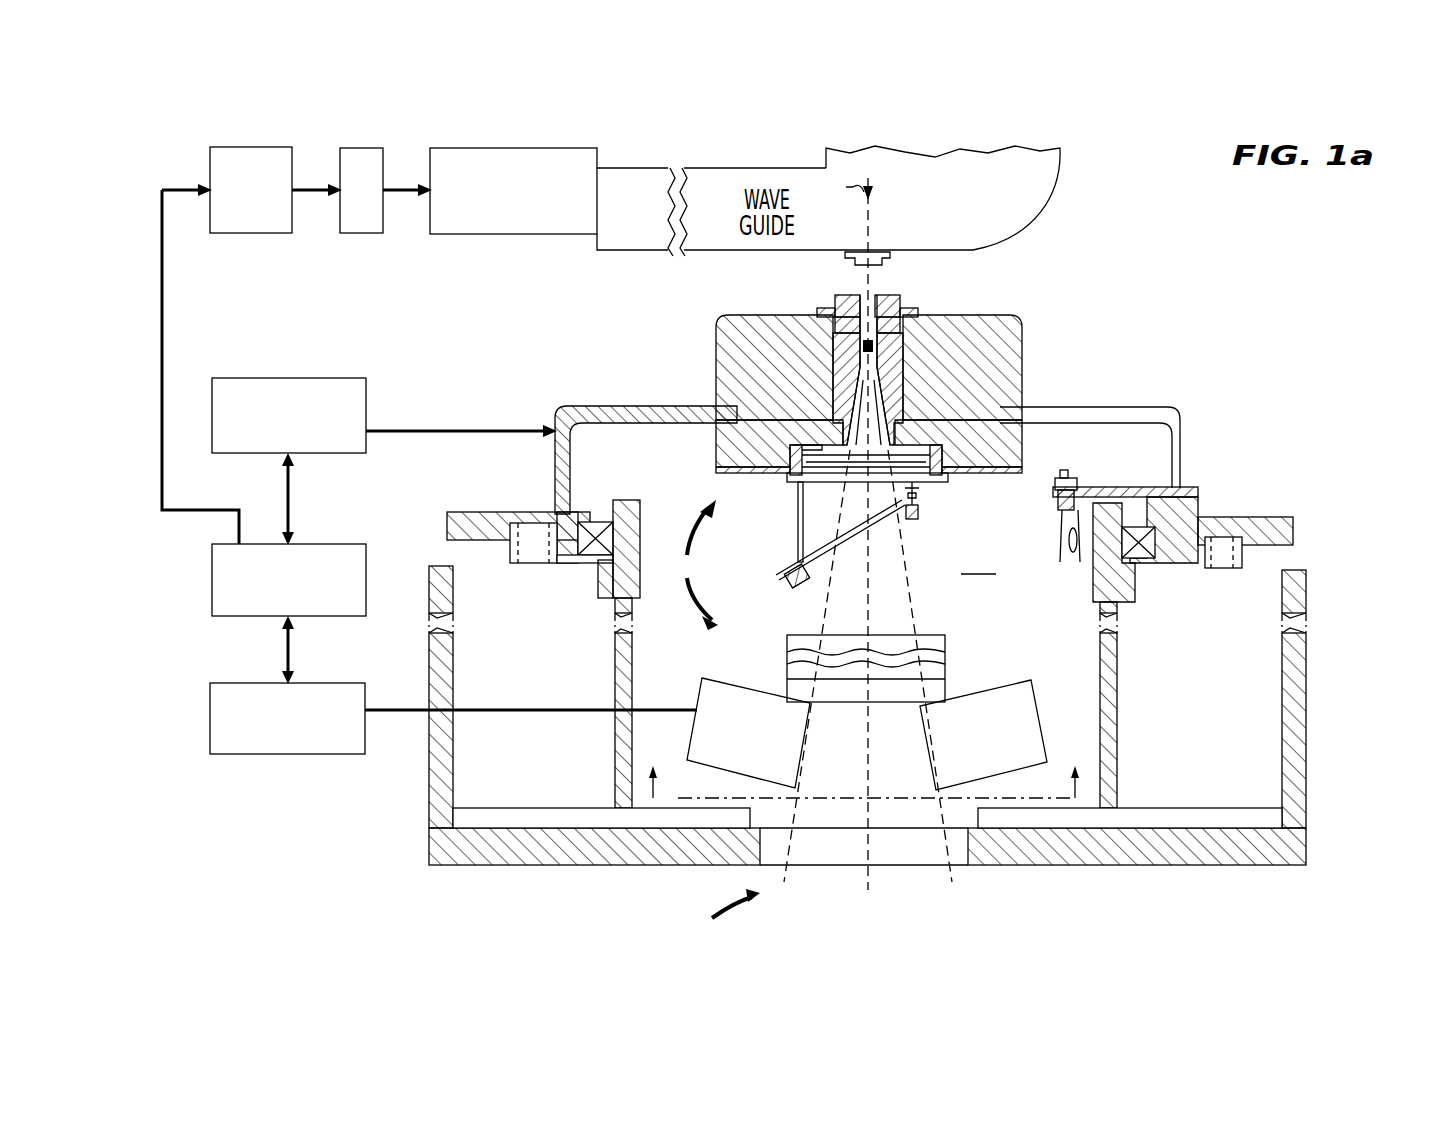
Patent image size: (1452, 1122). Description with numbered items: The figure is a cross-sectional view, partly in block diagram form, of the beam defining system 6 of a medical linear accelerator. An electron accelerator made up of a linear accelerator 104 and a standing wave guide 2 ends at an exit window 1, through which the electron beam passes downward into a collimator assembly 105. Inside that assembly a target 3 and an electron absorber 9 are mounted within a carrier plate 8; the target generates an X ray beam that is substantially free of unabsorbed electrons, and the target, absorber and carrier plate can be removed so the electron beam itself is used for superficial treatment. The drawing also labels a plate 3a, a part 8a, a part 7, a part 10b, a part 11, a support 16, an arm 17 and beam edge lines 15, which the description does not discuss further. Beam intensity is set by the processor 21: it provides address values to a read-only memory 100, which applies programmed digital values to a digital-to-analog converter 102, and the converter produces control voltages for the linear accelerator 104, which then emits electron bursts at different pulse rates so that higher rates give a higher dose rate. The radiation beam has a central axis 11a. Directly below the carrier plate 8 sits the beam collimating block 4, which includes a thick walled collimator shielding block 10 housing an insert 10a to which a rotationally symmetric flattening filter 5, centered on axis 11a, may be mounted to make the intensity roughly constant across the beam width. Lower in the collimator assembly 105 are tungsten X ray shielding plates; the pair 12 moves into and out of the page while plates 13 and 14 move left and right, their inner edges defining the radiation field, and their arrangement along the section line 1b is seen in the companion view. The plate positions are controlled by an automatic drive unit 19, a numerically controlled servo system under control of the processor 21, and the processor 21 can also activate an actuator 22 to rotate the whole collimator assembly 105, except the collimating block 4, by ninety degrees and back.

The read-only memory (ROM) 100 is at (248, 147).
The digital-to-analog converter (DAC) 102 is at (356, 148).
The linear accelerator 104 is at (478, 148).
The standing wave guide 2 is at (995, 147).
The exit window 1 is at (874, 252).
The target 3 is at (875, 293).
The beam window plate 3a is at (862, 293).
The carrier plate 8 is at (838, 295).
The insert block 8a is at (912, 300).
The flange 7 is at (832, 308).
The electron absorber 9 is at (918, 310).
The collimator shielding block 10 is at (716, 352).
The insert 10a is at (824, 324).
The collimator body 10b is at (833, 402).
The target 11 is at (887, 350).
The central axis 11a is at (838, 360).
The flattening filter 5 is at (903, 430).
The support plate assembly 16 is at (918, 484).
The arm 17 is at (853, 556).
The beam edge 15 is at (778, 880).
The beam collimating block 4 is at (1022, 352).
The collimator assembly 105 is at (867, 667).
The shielding plates (pair 12a, 12b) 12 is at (948, 642).
The shielding plate 13 is at (700, 686).
The shielding plate 14 is at (1036, 686).
The section line 1b is at (863, 767).
The beam defining system 6 is at (727, 910).
The actuator 22 is at (305, 378).
The processor 21 is at (340, 544).
The automatic drive unit 19 is at (345, 683).